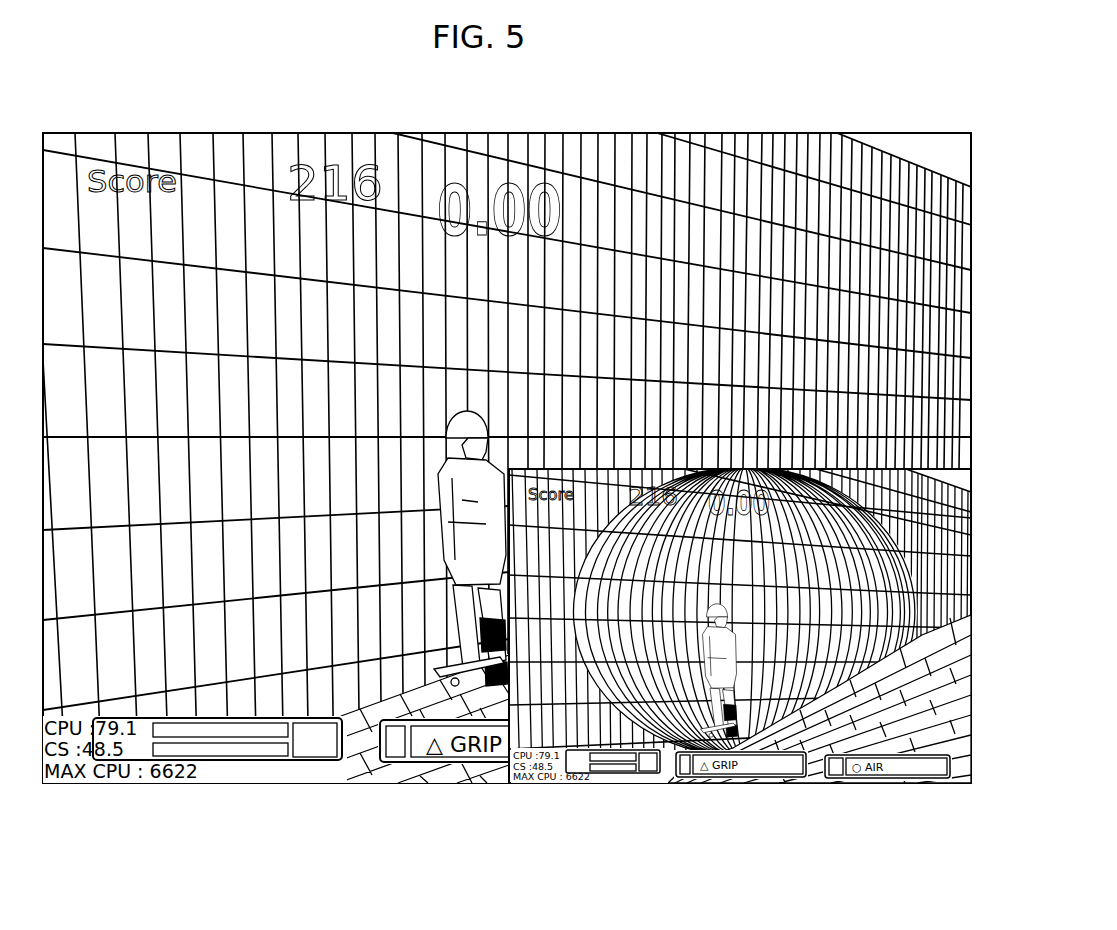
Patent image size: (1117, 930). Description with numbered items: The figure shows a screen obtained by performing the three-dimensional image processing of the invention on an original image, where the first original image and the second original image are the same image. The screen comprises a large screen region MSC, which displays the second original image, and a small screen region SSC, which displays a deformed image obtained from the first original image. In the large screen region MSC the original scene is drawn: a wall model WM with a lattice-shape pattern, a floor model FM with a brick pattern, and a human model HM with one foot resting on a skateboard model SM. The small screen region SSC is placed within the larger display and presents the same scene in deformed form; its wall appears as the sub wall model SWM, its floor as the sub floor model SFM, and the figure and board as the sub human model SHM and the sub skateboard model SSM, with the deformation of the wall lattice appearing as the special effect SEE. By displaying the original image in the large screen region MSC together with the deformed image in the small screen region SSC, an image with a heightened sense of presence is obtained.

The wall model WM is at (697, 186).
The large screen region MSC is at (947, 267).
The special effect (spherical bulge) SEE is at (857, 540).
The sub wall model SWM is at (905, 521).
The small screen region SSC is at (952, 581).
The sub floor model SFM is at (971, 704).
The floor model FM is at (347, 762).
The skateboard model SM is at (436, 684).
The human model HM is at (491, 692).
The sub human model SHM is at (700, 742).
The sub skateboard model SSM is at (724, 752).